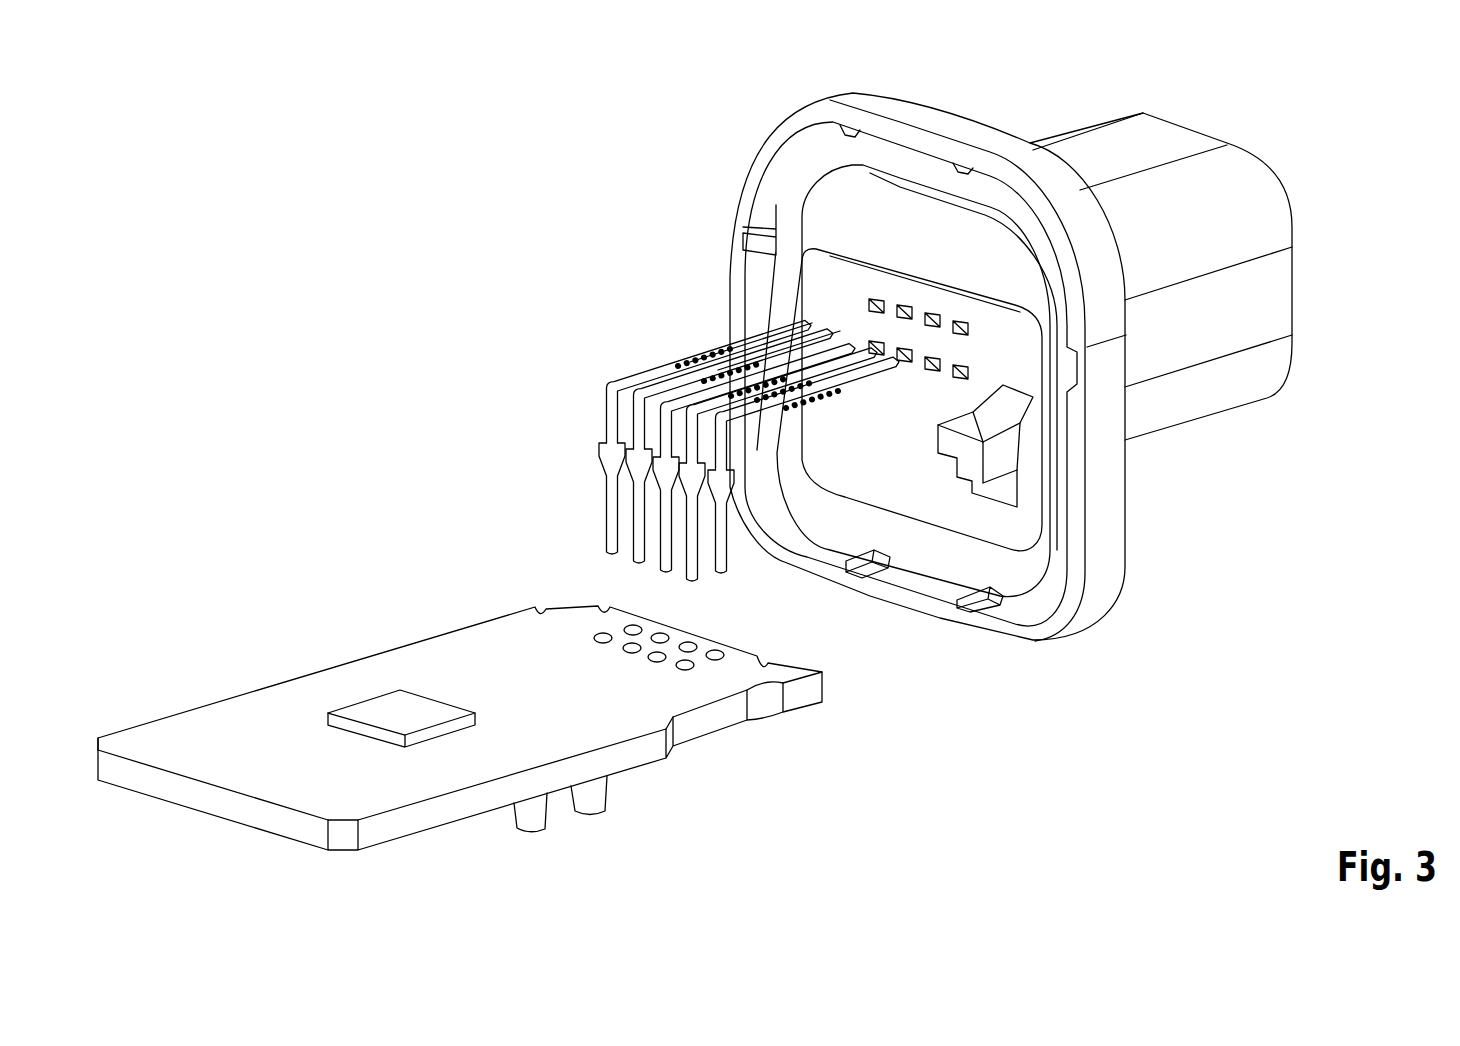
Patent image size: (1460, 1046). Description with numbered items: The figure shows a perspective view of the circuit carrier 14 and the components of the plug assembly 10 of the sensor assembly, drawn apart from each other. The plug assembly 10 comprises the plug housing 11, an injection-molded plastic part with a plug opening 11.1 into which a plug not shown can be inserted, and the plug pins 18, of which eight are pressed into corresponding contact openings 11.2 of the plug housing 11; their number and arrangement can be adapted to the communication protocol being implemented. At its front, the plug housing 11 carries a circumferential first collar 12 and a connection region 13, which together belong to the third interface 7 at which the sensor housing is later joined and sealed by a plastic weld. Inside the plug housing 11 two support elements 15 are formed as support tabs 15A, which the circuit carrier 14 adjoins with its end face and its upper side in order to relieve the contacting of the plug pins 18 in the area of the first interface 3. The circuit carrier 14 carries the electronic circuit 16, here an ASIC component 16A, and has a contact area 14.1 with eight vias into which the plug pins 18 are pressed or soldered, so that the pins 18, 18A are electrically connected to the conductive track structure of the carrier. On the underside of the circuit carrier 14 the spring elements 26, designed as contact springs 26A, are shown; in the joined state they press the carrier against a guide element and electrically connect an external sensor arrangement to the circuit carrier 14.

The first interface 3 is at (772, 205).
The third interface 7 is at (697, 123).
The plug assembly 10 is at (1285, 112).
The plug housing 11 is at (1273, 322).
The plug opening 11.1 is at (1295, 280).
The contact openings 11.2 is at (903, 300).
The first collar 12 is at (1111, 469).
The connection region 13 is at (832, 133).
The circuit carrier 14 is at (183, 726).
The contact area 14.1 is at (603, 634).
The support element 15 is at (1092, 452).
The support tabs 15A is at (1005, 455).
The electronic circuit 16 is at (264, 636).
The ASIC component 16A is at (378, 710).
The plug pins 18 is at (749, 437).
The contact pin press-fit section 18A is at (683, 360).
The spring element 26 is at (618, 804).
The contact spring 26A is at (592, 797).